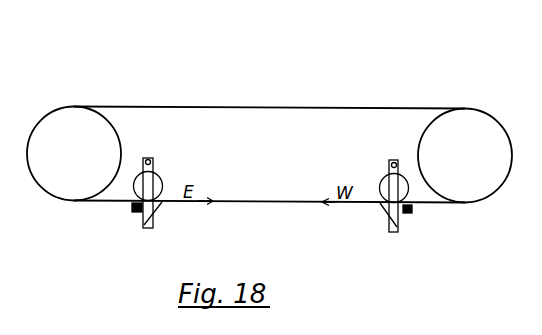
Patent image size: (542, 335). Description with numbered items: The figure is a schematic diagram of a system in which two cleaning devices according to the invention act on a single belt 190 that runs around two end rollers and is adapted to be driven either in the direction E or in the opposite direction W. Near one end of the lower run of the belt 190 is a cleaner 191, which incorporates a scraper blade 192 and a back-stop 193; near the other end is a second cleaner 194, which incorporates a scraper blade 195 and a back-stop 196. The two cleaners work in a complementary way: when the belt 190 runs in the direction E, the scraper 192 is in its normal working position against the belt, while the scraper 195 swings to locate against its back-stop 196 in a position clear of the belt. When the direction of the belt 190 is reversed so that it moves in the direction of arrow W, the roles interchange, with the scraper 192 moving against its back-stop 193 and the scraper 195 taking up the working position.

The belt 190 is at (267, 202).
The cleaner 191 is at (165, 170).
The scraper blade 192 is at (155, 207).
The back-stop 193 is at (133, 209).
The cleaner 194 is at (378, 153).
The scraper blade 195 is at (387, 206).
The back-stop 196 is at (411, 213).